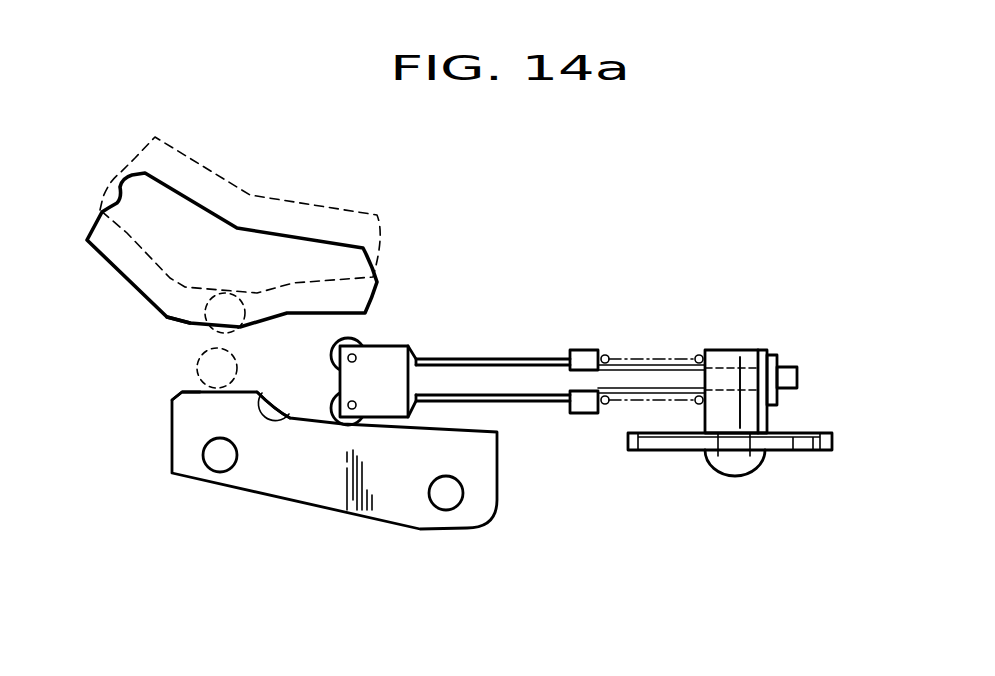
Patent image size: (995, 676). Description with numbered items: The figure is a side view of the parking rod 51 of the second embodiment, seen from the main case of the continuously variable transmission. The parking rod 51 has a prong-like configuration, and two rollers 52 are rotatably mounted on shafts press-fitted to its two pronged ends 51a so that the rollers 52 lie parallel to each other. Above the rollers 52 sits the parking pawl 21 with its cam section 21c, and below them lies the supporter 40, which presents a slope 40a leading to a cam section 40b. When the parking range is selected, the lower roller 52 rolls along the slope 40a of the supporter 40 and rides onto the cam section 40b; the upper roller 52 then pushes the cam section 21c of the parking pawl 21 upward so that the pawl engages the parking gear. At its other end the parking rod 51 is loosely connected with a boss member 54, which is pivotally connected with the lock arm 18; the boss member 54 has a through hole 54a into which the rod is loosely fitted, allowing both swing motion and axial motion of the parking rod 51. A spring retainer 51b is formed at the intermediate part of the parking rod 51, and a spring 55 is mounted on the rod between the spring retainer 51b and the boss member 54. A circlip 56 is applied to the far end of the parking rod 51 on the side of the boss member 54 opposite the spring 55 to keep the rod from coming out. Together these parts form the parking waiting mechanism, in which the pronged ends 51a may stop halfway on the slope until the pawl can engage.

The lock arm 18 is at (800, 447).
The parking pawl 21 is at (233, 247).
The cam section 21c is at (182, 326).
The supporter 40 is at (320, 490).
The slope 40a is at (290, 425).
The cam section 40b is at (192, 388).
The parking rod 51 is at (503, 372).
The pronged ends 51a is at (397, 393).
The spring retainer 51b is at (583, 350).
The rollers 52 is at (363, 343).
The boss member 54 is at (747, 357).
The through hole 54a is at (752, 402).
The spring 55 is at (605, 407).
The circlip 56 is at (770, 353).